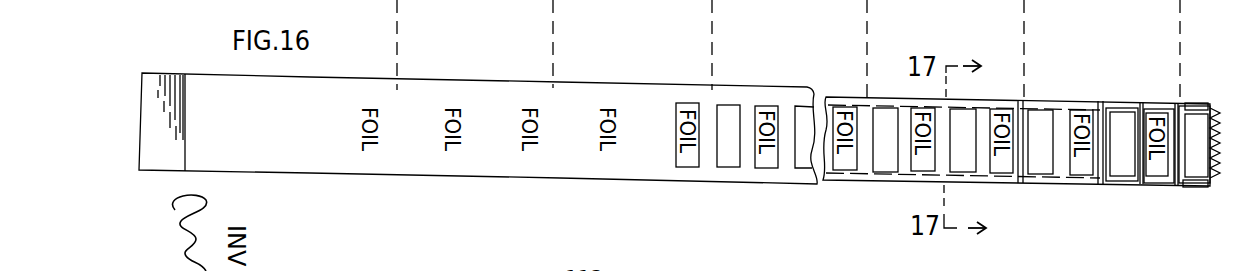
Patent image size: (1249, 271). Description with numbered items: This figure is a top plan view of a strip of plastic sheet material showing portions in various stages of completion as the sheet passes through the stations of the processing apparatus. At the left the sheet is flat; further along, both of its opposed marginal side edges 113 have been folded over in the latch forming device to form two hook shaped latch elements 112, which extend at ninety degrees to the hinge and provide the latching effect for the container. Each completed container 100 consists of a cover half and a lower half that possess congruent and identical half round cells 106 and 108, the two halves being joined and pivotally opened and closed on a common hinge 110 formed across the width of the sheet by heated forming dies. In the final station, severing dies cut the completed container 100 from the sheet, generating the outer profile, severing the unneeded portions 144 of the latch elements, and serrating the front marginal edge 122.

The container 100 is at (1153, 170).
The half round cell 106 is at (680, 108).
The half round cell 108 is at (727, 122).
The common hinge 110 is at (1020, 108).
The hook shaped latch element 112 is at (918, 103).
The marginal side edge 113 is at (782, 86).
The front marginal edge 122 is at (1216, 180).
The unneeded portions of the latch elements 144 is at (1180, 108).